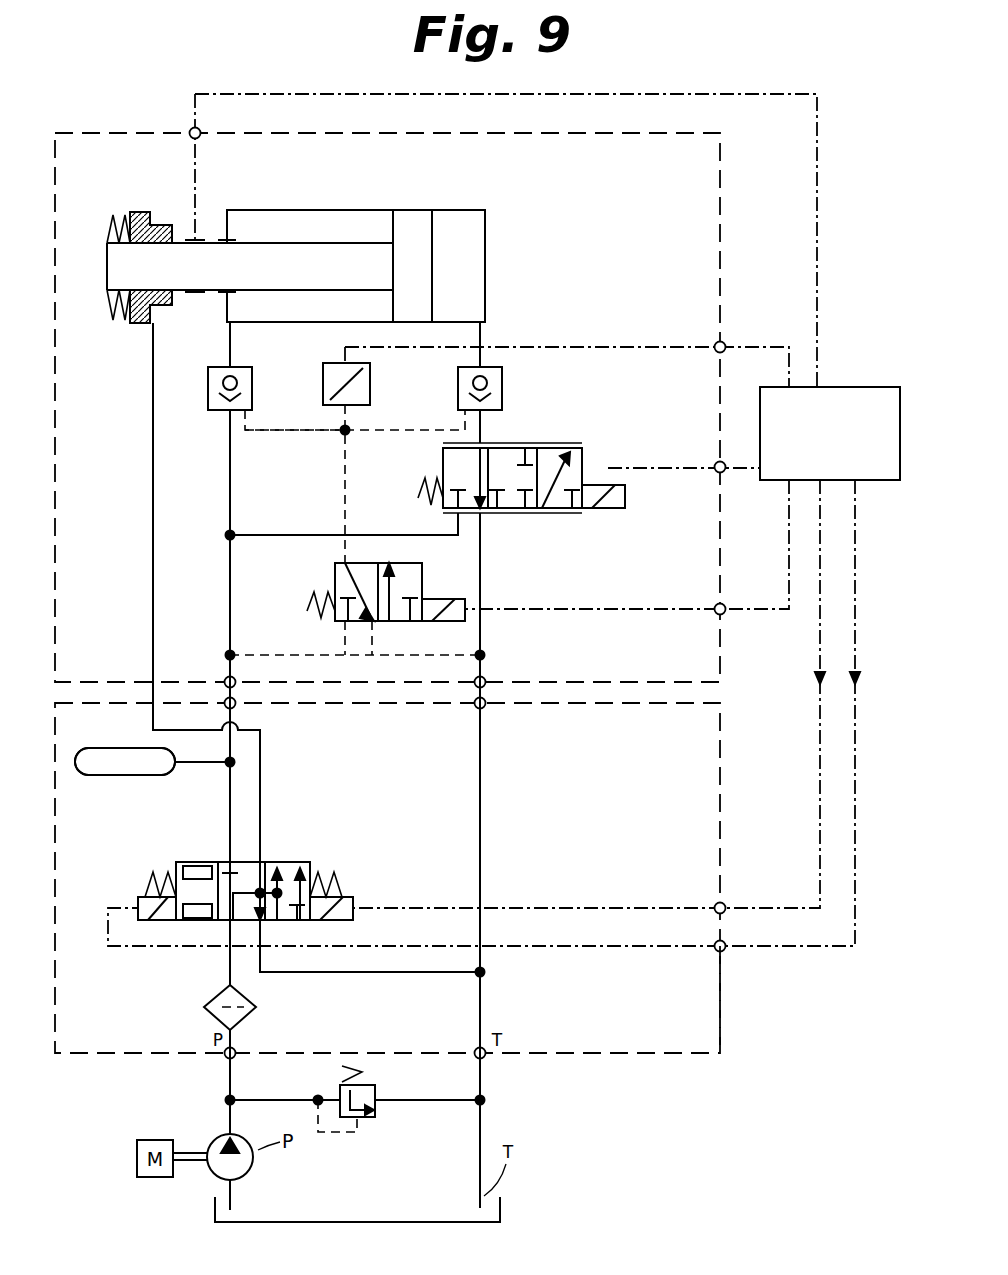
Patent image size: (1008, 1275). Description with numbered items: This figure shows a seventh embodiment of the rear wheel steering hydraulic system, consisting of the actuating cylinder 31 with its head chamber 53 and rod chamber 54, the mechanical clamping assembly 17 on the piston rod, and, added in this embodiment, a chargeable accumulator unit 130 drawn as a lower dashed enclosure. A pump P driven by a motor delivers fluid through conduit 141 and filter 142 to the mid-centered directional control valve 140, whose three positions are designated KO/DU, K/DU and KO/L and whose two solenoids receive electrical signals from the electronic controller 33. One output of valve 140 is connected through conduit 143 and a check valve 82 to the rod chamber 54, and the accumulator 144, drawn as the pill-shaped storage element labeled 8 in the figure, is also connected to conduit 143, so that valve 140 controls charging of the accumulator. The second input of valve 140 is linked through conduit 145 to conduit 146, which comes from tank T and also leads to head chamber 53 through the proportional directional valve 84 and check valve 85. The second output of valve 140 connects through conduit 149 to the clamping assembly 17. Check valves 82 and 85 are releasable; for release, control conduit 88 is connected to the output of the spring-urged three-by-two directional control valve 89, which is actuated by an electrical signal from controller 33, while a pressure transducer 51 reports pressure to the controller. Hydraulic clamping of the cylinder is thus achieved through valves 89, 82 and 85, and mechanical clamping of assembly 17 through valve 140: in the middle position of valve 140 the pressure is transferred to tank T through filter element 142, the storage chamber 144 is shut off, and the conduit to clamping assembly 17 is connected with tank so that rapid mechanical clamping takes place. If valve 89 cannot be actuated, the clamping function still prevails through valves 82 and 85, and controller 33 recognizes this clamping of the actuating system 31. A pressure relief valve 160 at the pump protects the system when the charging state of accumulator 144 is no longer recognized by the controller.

The accumulator 8 is at (125, 750).
The clamping assembly 17 is at (136, 325).
The actuating cylinder 31 is at (460, 210).
The electronic controller 33 is at (855, 387).
The pressure transducer 51 is at (370, 370).
The head chamber 53 is at (485, 263).
The rod chamber 54 is at (280, 323).
The check valve 82 is at (252, 402).
The directional valve 84 is at (554, 518).
The check valve 85 is at (502, 382).
The control conduit 88 is at (284, 434).
The 3/2 directional control valve 89 is at (402, 622).
The chargeable accumulator unit 130 is at (722, 992).
The directional control valve 140 is at (308, 860).
The conduit 141 is at (228, 1076).
The filter 142 is at (248, 1020).
The conduit 143 is at (228, 792).
The accumulator 144 is at (122, 775).
The conduit 145 is at (413, 975).
The conduit 146 is at (482, 1000).
The conduit 149 is at (262, 745).
The pressure relief valve 160 is at (375, 1085).